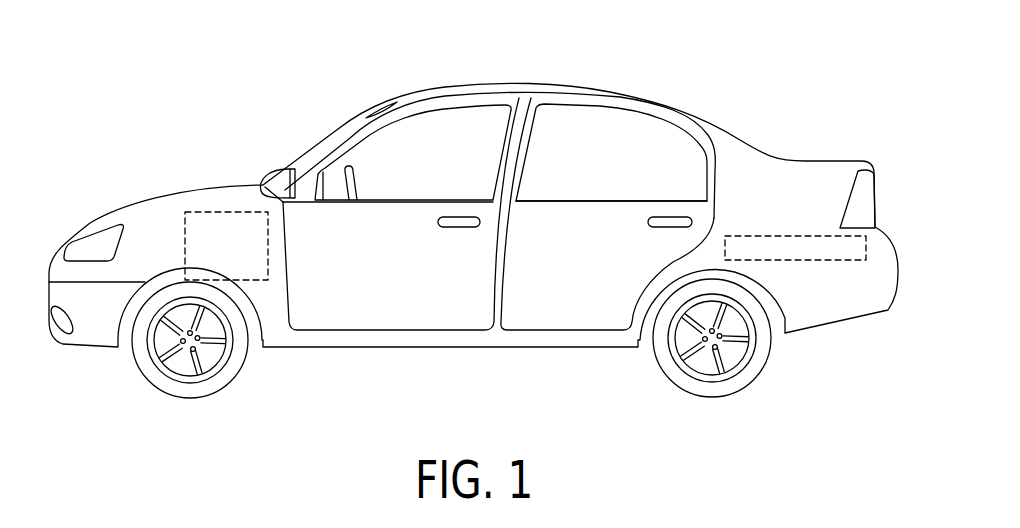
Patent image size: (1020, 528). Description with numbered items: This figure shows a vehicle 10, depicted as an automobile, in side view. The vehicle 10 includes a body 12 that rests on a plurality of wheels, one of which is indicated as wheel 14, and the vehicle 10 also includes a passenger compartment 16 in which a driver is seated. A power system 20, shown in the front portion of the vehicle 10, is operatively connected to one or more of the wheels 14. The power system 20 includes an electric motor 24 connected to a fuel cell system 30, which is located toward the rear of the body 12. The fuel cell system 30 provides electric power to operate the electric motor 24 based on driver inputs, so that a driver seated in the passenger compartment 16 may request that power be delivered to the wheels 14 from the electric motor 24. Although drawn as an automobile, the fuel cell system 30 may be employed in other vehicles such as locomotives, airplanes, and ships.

The vehicle 10 is at (265, 54).
The body 12 is at (807, 185).
The wheel 14 is at (773, 392).
The passenger compartment 16 is at (423, 68).
The power system 20 is at (186, 183).
The electric motor 24 is at (227, 245).
The fuel cell system 30 is at (797, 247).